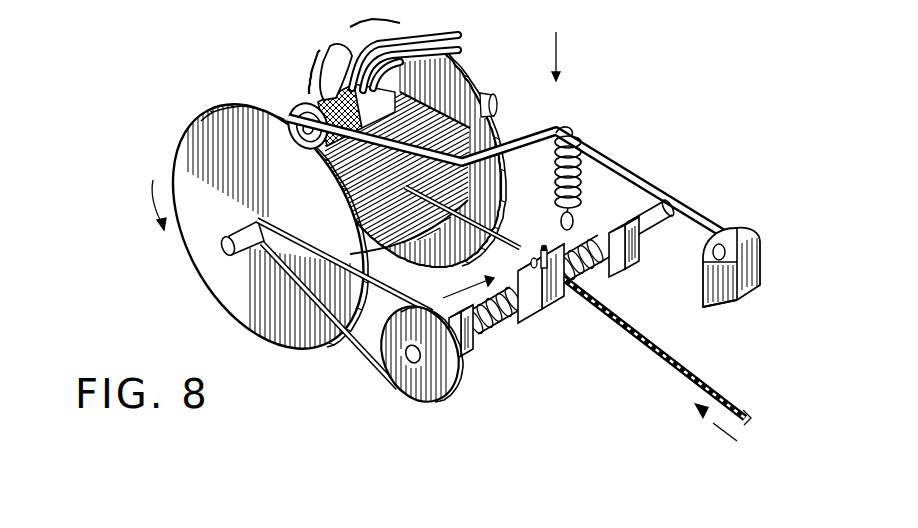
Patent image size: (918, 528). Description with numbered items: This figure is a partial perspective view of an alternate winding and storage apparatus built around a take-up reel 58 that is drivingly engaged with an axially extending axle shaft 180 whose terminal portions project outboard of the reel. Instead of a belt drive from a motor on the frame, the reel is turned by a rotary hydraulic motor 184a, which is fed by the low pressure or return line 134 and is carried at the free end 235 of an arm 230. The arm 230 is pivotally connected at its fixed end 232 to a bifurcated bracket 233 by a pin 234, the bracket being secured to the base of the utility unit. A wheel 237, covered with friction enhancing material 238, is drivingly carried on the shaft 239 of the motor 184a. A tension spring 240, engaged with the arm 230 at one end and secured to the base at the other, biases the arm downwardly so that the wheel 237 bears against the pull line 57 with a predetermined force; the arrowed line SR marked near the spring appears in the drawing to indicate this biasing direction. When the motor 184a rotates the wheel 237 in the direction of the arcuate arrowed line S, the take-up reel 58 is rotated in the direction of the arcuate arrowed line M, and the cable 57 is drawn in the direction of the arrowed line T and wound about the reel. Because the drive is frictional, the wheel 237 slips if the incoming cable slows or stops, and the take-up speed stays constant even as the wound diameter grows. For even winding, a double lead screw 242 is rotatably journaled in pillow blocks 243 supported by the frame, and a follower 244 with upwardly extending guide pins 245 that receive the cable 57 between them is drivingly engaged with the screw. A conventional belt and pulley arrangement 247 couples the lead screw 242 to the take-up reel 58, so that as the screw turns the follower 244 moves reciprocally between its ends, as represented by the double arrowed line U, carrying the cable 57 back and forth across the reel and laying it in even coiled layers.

The pull line 57 is at (672, 360).
The take-up reel 58 is at (246, 313).
The low pressure or return line 134 is at (453, 28).
The axle shaft 180 is at (222, 248).
The rotary hydraulic motor 184a is at (330, 52).
The arm 230 is at (705, 212).
The fixed end 232 is at (752, 226).
The bifurcated bracket 233 is at (728, 303).
The pin 234 is at (708, 270).
The free end 235 is at (420, 118).
The wheel 237 is at (303, 112).
The friction enhancing material 238 is at (330, 86).
The shaft 239 is at (300, 148).
The tension spring 240 is at (558, 182).
The double lead screw 242 is at (508, 322).
The pillow blocks 243 is at (476, 358).
The follower 244 is at (560, 312).
The guide pins 245 is at (546, 250).
The belt and pulley arrangement 247 is at (375, 356).
The direction of wheel rotation S is at (312, 158).
The direction of reel rotation M is at (150, 196).
The direction SR is at (567, 56).
The direction of follower movement U is at (462, 290).
The direction of cable travel T is at (717, 428).